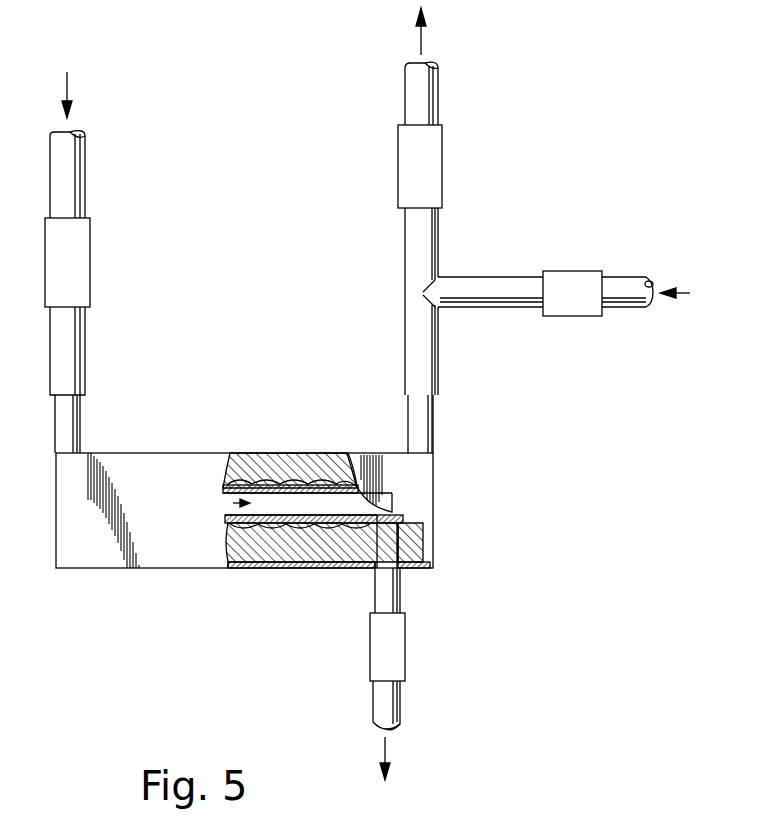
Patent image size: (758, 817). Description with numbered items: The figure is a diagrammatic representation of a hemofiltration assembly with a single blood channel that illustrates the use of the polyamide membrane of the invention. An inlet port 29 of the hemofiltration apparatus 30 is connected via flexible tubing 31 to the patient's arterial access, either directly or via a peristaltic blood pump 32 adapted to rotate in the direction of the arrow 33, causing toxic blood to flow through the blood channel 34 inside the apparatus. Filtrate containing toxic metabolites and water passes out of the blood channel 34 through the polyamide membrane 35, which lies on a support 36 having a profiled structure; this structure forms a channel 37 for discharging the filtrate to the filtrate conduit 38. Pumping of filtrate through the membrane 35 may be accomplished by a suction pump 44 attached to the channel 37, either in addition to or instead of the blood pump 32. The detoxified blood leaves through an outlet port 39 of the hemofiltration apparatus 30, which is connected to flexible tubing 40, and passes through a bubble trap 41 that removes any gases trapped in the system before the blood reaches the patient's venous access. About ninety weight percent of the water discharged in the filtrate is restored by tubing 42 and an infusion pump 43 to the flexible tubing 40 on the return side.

The inlet port 29 is at (70, 428).
The hemofiltration apparatus 30 is at (120, 592).
The flexible tubing 31 is at (75, 177).
The blood pump 32 is at (83, 258).
The arrow 33 is at (67, 90).
The blood channel 34 is at (222, 508).
The polyamide membrane 35 is at (223, 501).
The support 36 is at (314, 466).
The channel 37 is at (389, 526).
The filtrate conduit 38 is at (397, 593).
The outlet port 39 is at (425, 423).
The flexible tubing 40 is at (430, 97).
The bubble trap 41 is at (436, 165).
The tubing 42 is at (490, 287).
The infusion pump 43 is at (586, 280).
The suction pump 44 is at (400, 645).